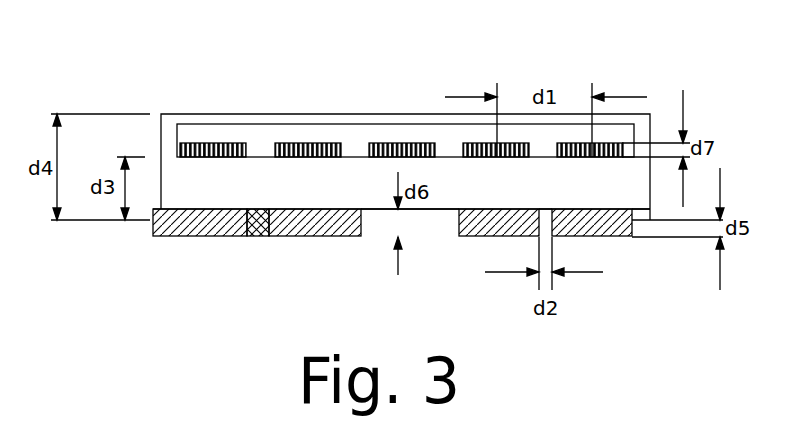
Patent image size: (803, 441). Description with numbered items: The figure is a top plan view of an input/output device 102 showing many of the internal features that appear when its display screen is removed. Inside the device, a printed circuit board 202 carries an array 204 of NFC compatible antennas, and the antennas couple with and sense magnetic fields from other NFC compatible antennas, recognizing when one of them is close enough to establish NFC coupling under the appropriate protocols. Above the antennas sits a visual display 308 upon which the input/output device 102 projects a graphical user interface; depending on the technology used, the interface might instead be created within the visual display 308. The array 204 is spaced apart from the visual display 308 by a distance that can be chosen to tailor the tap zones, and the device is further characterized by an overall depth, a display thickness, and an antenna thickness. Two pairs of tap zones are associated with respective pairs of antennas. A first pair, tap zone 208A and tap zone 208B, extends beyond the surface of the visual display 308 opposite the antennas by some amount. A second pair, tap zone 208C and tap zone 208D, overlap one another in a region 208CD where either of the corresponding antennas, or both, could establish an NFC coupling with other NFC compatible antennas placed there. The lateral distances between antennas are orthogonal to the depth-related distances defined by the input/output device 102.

The input/output device 102 is at (336, 62).
The printed circuit board 202 is at (220, 128).
The array 204 is at (636, 118).
The tap zone 208A is at (628, 238).
The tap zone 208B is at (458, 238).
The tap zone 208C is at (153, 238).
The region 208CD is at (254, 238).
The tap zone 208D is at (360, 238).
The visual display 308 is at (380, 209).